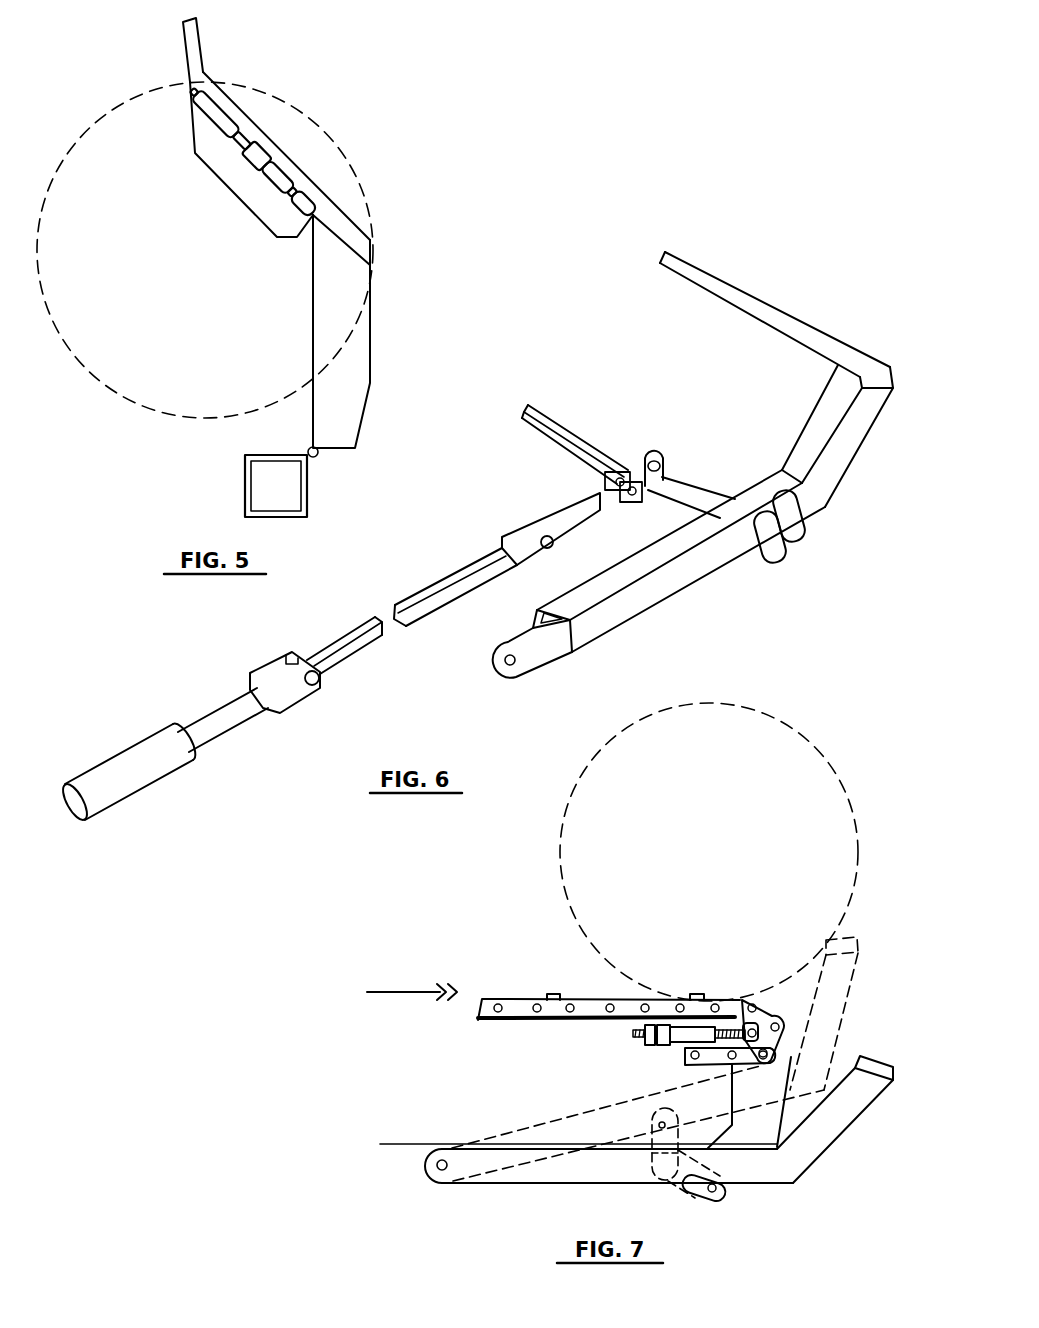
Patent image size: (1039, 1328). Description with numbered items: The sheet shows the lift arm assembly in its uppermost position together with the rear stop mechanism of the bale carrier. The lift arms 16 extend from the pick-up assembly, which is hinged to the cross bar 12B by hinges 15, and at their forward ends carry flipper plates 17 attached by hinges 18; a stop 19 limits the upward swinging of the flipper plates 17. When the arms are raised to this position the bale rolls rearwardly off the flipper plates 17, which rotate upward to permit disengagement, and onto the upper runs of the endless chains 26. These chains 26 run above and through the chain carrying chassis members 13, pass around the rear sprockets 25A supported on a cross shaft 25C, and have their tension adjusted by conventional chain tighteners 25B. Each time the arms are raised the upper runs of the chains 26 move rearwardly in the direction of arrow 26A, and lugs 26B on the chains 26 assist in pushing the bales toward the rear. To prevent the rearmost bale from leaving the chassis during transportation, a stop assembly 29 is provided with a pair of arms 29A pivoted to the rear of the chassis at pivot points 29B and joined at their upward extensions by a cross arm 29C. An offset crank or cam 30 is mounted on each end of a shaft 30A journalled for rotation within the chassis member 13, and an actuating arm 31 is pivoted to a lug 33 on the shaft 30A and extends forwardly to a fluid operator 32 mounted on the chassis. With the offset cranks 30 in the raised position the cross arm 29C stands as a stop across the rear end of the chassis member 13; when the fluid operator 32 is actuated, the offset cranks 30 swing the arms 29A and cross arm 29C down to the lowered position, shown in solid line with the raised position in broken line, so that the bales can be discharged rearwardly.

In FIG. 5, the cross bar 12B is at (248, 478).
In FIG. 7, the chain carrying chassis member 13 is at (385, 1152).
In FIG. 5, the hinge 15 is at (318, 457).
In FIG. 5, the lift arm 16 is at (360, 382).
In FIG. 5, the flipper plate 17 is at (240, 190).
In FIG. 5, the hinge 18 is at (305, 194).
In FIG. 5, the stop 19 is at (253, 137).
In FIG. 7, the rear sprocket 25A is at (740, 1004).
In FIG. 7, the chain tightener 25B is at (677, 1042).
In FIG. 7, the cross shaft 25C is at (750, 1043).
In FIG. 7, the endless chain 26 is at (593, 1001).
In FIG. 7, the arrow 26A is at (412, 983).
In FIG. 7, the lug 26B is at (547, 997).
In FIG. 6, the stop assembly 29 is at (802, 435).
In FIG. 7, the stop assembly 29 is at (827, 1148).
In FIG. 6, the arm 29A is at (640, 597).
In FIG. 7, the arm 29A is at (595, 1175).
In FIG. 6, the pivot point 29B is at (517, 667).
In FIG. 7, the pivot point 29B is at (432, 1182).
In FIG. 6, the cross arm 29C is at (783, 332).
In FIG. 7, the cross arm 29C is at (865, 1063).
In FIG. 6, the offset crank 30 is at (807, 523).
In FIG. 7, the offset crank 30 is at (677, 1120).
In FIG. 6, the shaft 30A is at (697, 495).
In FIG. 6, the actuating arm 31 is at (527, 520).
In FIG. 6, the fluid operator 32 is at (194, 755).
In FIG. 6, the lug 33 is at (657, 450).